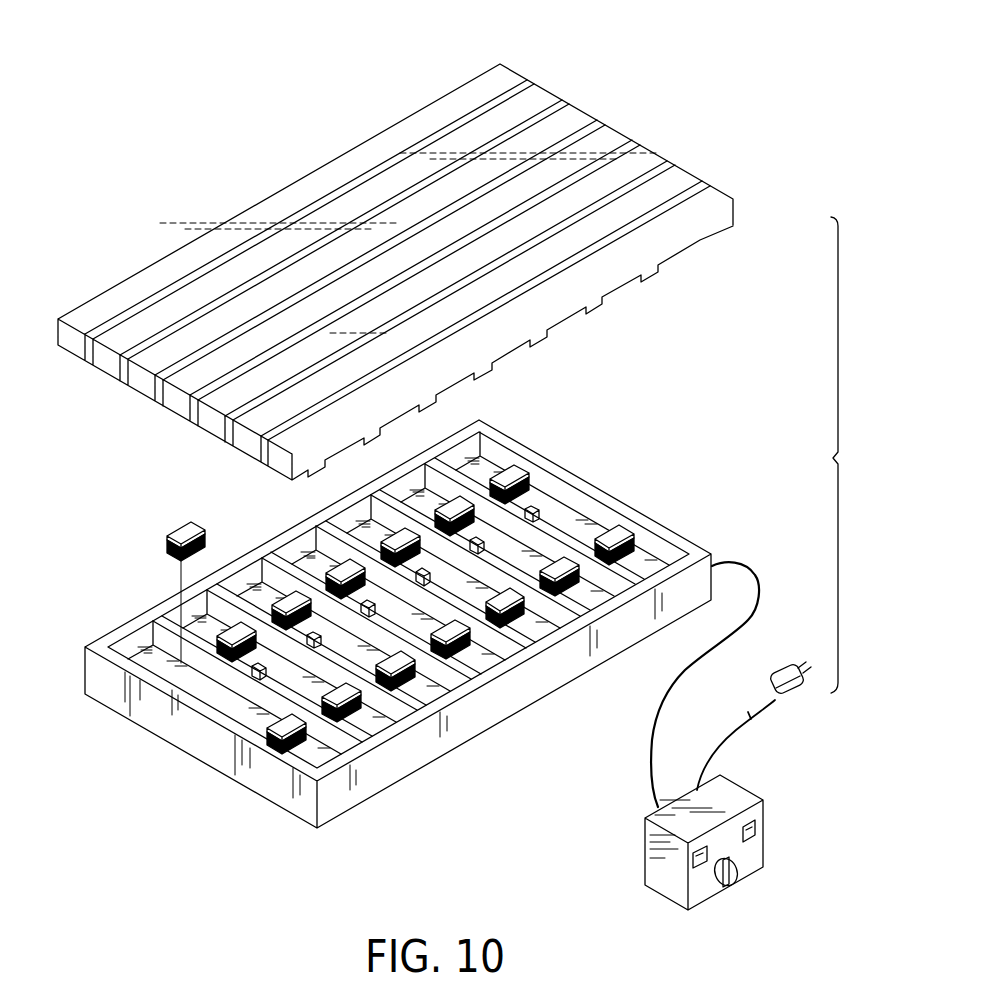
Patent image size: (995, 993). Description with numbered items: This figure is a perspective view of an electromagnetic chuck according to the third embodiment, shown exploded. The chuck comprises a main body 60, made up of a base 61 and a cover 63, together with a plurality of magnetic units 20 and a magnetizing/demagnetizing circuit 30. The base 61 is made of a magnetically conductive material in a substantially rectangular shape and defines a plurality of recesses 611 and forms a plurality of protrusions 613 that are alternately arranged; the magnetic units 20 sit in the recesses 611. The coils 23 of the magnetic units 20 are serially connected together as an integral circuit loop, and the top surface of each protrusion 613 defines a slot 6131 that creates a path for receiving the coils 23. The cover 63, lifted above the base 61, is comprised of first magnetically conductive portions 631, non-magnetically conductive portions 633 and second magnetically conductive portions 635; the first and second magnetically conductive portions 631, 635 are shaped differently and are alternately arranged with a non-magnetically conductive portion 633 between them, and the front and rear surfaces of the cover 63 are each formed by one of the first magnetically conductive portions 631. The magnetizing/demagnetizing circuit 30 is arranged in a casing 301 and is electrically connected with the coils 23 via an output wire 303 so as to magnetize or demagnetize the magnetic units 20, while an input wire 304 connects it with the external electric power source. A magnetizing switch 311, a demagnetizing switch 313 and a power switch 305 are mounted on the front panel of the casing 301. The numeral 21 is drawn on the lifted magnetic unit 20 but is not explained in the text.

The main body 60 is at (856, 455).
The cover 63 is at (435, 241).
The first magnetically conductive portion 631 is at (503, 68).
The non-magnetically conductive portion 633 is at (530, 85).
The second magnetically conductive portion 635 is at (550, 100).
The base 61 is at (670, 522).
The recess 611 is at (472, 444).
The protrusion 613 is at (322, 521).
The slot 6131 is at (537, 512).
The magnetic unit 20 is at (376, 637).
The upper casing 21 is at (170, 524).
The coil 23 is at (168, 548).
The magnetizing/demagnetizing circuit 30 is at (620, 876).
The casing 301 is at (744, 790).
The output wire 303 is at (762, 582).
The input wire 304 is at (775, 700).
The power switch 305 is at (742, 876).
The magnetizing switch 311 is at (760, 820).
The demagnetizing switch 313 is at (702, 856).